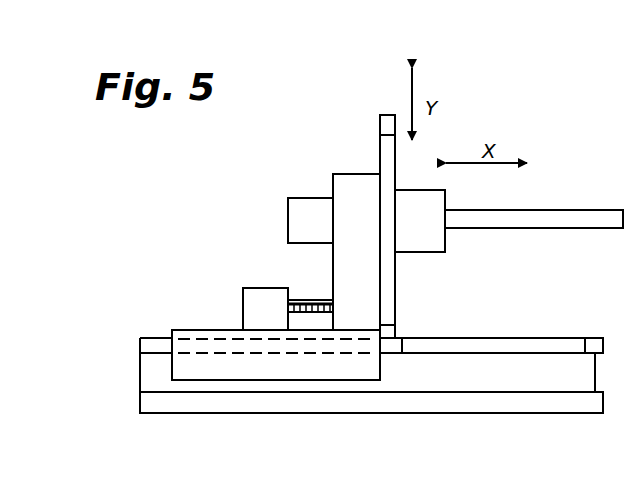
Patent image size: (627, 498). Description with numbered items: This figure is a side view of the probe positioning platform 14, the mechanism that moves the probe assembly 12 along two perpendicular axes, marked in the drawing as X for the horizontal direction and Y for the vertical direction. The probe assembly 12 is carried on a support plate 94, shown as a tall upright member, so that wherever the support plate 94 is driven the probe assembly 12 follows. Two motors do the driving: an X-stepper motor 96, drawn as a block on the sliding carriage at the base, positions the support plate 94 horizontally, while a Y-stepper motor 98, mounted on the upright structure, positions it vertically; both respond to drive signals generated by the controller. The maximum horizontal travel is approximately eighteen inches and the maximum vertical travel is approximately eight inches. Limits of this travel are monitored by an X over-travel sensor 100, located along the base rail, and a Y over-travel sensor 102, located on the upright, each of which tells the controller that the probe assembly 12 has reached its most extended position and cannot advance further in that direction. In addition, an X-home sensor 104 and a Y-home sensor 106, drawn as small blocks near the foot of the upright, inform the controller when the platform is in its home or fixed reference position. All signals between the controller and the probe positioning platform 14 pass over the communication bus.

The probe assembly 12 is at (585, 188).
The probe positioning platform 14 is at (180, 268).
The support plate 94 is at (390, 113).
The X-stepper motor 96 is at (243, 310).
The Y-stepper motor 98 is at (305, 205).
The X over-travel sensor 100 is at (590, 338).
The Y over-travel sensor 102 is at (380, 152).
The X-home sensor 104 is at (402, 345).
The Y-home sensor 106 is at (395, 328).